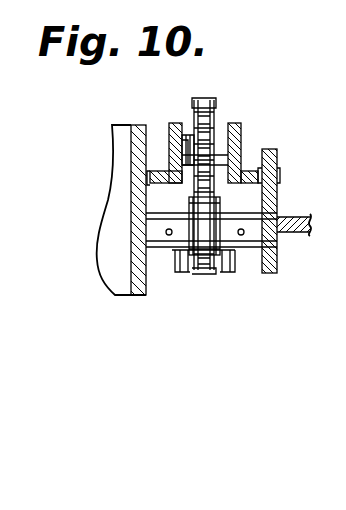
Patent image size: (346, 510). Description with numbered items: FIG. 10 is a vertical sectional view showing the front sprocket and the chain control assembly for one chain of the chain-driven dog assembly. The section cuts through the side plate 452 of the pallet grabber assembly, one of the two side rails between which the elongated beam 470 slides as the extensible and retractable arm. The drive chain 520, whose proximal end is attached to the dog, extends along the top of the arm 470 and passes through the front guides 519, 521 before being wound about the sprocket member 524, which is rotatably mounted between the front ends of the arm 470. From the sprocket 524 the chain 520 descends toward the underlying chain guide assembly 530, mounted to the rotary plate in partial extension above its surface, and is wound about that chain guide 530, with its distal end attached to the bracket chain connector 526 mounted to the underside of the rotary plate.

The side plate 452 is at (141, 288).
The elongated beam 470 is at (209, 187).
The front guide 519 is at (190, 132).
The drive chain 520 is at (203, 103).
The front guide 521 is at (214, 109).
The sprocket member 524 is at (187, 134).
The bracket chain connector 526 is at (235, 272).
The chain guide assembly 530 is at (203, 230).